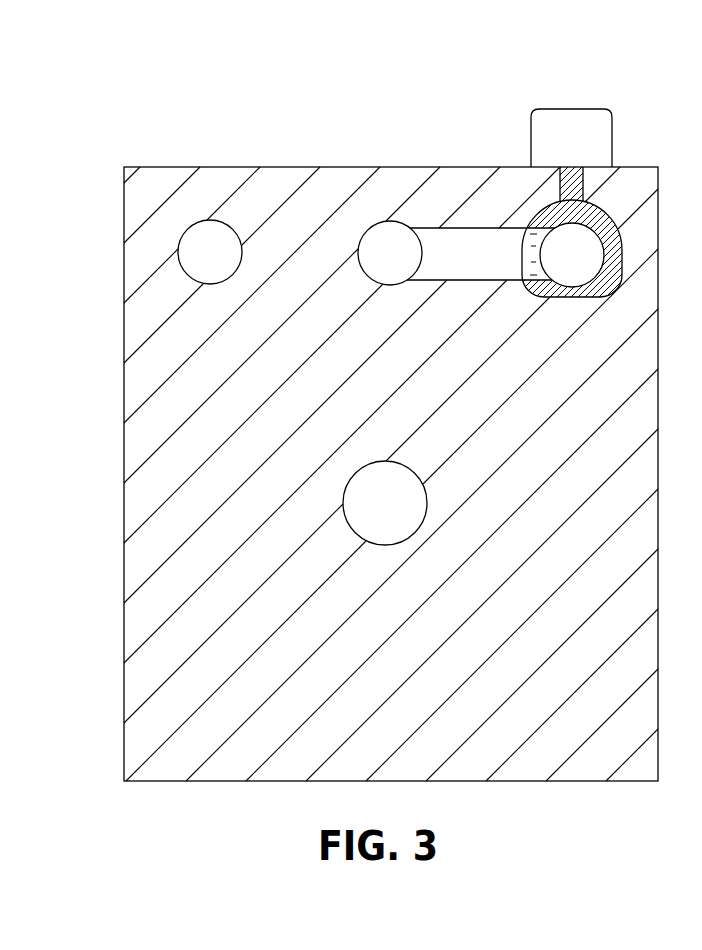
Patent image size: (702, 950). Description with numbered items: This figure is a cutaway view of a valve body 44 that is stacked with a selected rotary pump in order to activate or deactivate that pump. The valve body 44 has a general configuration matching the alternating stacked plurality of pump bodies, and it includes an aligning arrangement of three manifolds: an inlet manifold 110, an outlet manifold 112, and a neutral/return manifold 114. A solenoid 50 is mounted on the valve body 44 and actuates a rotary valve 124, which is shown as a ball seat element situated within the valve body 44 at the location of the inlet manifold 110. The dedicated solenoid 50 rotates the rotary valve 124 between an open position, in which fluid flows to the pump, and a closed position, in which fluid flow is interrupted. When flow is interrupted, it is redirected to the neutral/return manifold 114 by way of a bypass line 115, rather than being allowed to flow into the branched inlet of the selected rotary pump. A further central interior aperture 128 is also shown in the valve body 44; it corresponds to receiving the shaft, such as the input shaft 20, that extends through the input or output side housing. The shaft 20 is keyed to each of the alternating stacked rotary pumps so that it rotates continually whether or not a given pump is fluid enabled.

The valve body 44 is at (423, 92).
The outlet manifold 112 is at (214, 226).
The neutral/return manifold 114 is at (394, 228).
The bypass line 115 is at (464, 236).
The rotary valve 124 is at (602, 222).
The inlet manifold 110 is at (543, 257).
The solenoid 50 is at (572, 118).
The central interior aperture 128 is at (365, 470).
The input shaft 20 is at (369, 526).